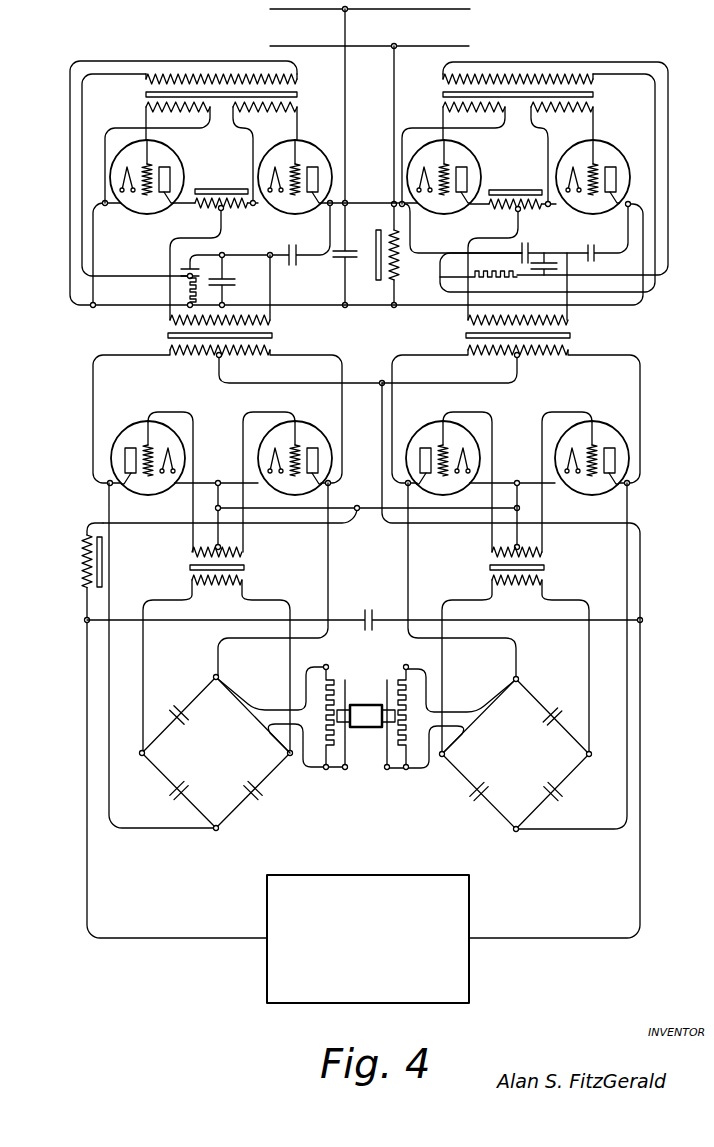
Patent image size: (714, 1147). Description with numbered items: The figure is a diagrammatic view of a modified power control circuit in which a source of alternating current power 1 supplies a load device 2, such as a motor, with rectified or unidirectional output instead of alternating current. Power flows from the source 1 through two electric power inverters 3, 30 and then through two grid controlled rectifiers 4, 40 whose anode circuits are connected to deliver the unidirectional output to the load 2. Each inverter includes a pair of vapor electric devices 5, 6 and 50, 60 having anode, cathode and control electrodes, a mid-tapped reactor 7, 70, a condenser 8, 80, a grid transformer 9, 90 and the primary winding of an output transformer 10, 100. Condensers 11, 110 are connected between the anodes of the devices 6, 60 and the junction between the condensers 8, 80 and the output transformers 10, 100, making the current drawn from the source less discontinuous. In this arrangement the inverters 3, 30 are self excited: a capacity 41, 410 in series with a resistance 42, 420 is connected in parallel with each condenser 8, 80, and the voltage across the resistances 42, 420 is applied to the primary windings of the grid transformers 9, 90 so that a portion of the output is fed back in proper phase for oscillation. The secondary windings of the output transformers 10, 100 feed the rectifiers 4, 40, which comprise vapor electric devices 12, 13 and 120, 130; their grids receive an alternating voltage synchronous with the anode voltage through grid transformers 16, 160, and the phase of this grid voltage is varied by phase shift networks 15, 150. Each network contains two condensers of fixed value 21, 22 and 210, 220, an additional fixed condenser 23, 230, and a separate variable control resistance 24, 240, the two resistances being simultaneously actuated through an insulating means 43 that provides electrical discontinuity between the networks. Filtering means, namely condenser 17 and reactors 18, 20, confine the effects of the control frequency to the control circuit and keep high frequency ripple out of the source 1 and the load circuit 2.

The source of alternating current power 1 is at (365, 28).
The load device 2 is at (368, 939).
The electric power inverter 3 is at (40, 151).
The grid controlled rectifier 4 is at (40, 417).
The vapor electric device 5 is at (147, 169).
The vapor electric device 6 is at (295, 169).
The mid-tapped reactor 7 is at (214, 245).
The condenser 8 is at (226, 280).
The grid transformer 9 is at (201, 138).
The output transformer 10 is at (276, 320).
The condenser 11 is at (300, 247).
The vapor electric device 12 is at (152, 475).
The vapor electric device 13 is at (287, 475).
The phase shift network 15 is at (224, 762).
The grid transformer 16 is at (216, 650).
The condenser 17 is at (365, 608).
The reactor 18 is at (104, 573).
The reactor 20 is at (377, 158).
The condenser of fixed value 21 is at (191, 717).
The condenser of fixed value 22 is at (168, 790).
The additional condenser 23 is at (265, 790).
The control resistance 24 is at (283, 706).
The electric power inverter 30 is at (690, 149).
The grid controlled rectifier 40 is at (664, 417).
The capacity 41 is at (177, 268).
The resistance 42 is at (178, 290).
The insulating means 43 is at (368, 733).
The vapor electric device 50 is at (443, 170).
The vapor electric device 60 is at (593, 170).
The mid-tapped reactor 70 is at (512, 244).
The condenser 80 is at (526, 254).
The grid transformer 90 is at (509, 139).
The output transformer 100 is at (490, 318).
The condenser 110 is at (609, 232).
The vapor electric device 120 is at (449, 475).
The vapor electric device 130 is at (585, 475).
The phase shift network 150 is at (529, 762).
The grid transformer 160 is at (515, 650).
The condenser of fixed value 210 is at (537, 717).
The condenser of fixed value 220 is at (569, 792).
The additional condenser 230 is at (463, 792).
The control resistance 240 is at (450, 706).
The capacity 410 is at (558, 272).
The resistance 420 is at (487, 284).